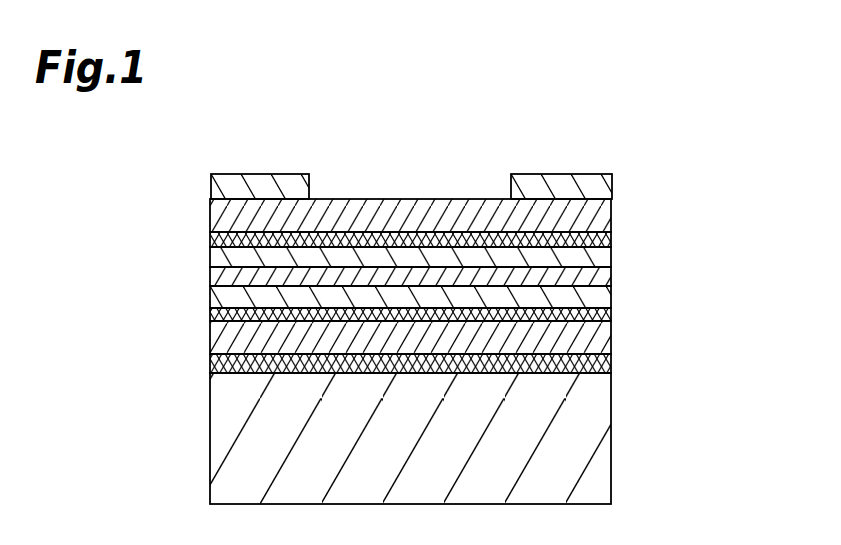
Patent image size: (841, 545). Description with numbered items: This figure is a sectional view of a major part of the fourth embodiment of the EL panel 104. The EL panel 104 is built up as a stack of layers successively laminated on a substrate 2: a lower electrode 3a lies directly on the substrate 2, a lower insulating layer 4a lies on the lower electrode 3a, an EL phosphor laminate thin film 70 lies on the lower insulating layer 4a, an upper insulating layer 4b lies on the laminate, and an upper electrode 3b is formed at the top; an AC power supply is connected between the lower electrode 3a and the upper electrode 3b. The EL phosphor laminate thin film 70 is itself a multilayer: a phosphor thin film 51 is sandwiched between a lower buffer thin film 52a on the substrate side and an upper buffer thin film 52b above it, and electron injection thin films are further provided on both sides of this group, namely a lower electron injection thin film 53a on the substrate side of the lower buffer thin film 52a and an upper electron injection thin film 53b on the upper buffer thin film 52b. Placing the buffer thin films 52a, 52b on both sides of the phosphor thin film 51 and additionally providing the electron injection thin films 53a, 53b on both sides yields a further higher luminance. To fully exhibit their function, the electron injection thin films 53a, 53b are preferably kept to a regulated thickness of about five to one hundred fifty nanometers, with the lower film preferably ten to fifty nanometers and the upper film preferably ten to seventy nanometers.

The EL panel 104 is at (392, 137).
The upper electrode 3b is at (287, 174).
The upper insulating layer 4b is at (612, 215).
The upper electron injection thin film 53b is at (612, 240).
The upper buffer thin film 52b is at (612, 265).
The phosphor thin film 51 is at (612, 282).
The lower buffer thin film 52a is at (612, 297).
The lower electron injection thin film 53a is at (612, 315).
The EL phosphor laminate thin film 70 is at (745, 213).
The lower insulating layer 4a is at (612, 337).
The lower electrode 3a is at (612, 365).
The substrate 2 is at (612, 430).